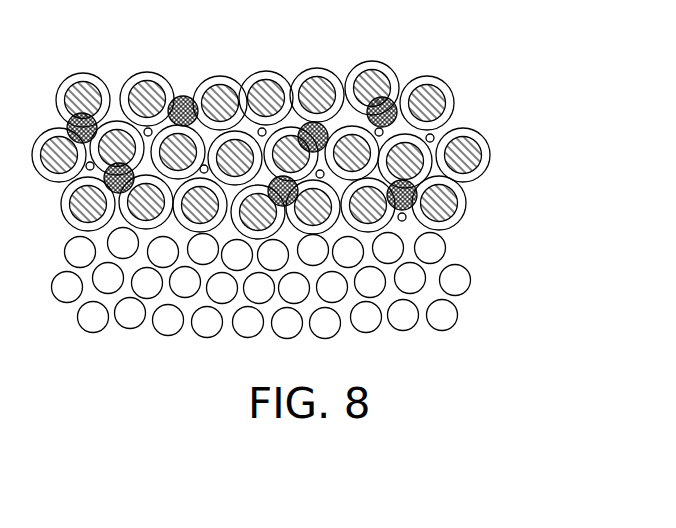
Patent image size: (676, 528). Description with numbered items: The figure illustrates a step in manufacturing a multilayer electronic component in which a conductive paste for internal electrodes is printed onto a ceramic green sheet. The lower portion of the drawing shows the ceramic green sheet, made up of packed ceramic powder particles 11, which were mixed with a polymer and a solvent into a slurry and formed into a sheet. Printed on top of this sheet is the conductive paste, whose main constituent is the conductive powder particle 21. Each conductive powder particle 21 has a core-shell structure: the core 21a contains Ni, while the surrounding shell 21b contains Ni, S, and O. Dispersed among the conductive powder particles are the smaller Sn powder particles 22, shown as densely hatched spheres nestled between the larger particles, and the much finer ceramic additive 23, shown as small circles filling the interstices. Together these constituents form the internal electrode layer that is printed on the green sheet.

The ceramic powder particle 11 is at (445, 318).
The conductive powder particle 21 is at (306, 150).
The core 21a is at (449, 85).
The shell 21b is at (445, 106).
The Sn powder particle 22 is at (380, 98).
The ceramic additive 23 is at (407, 217).